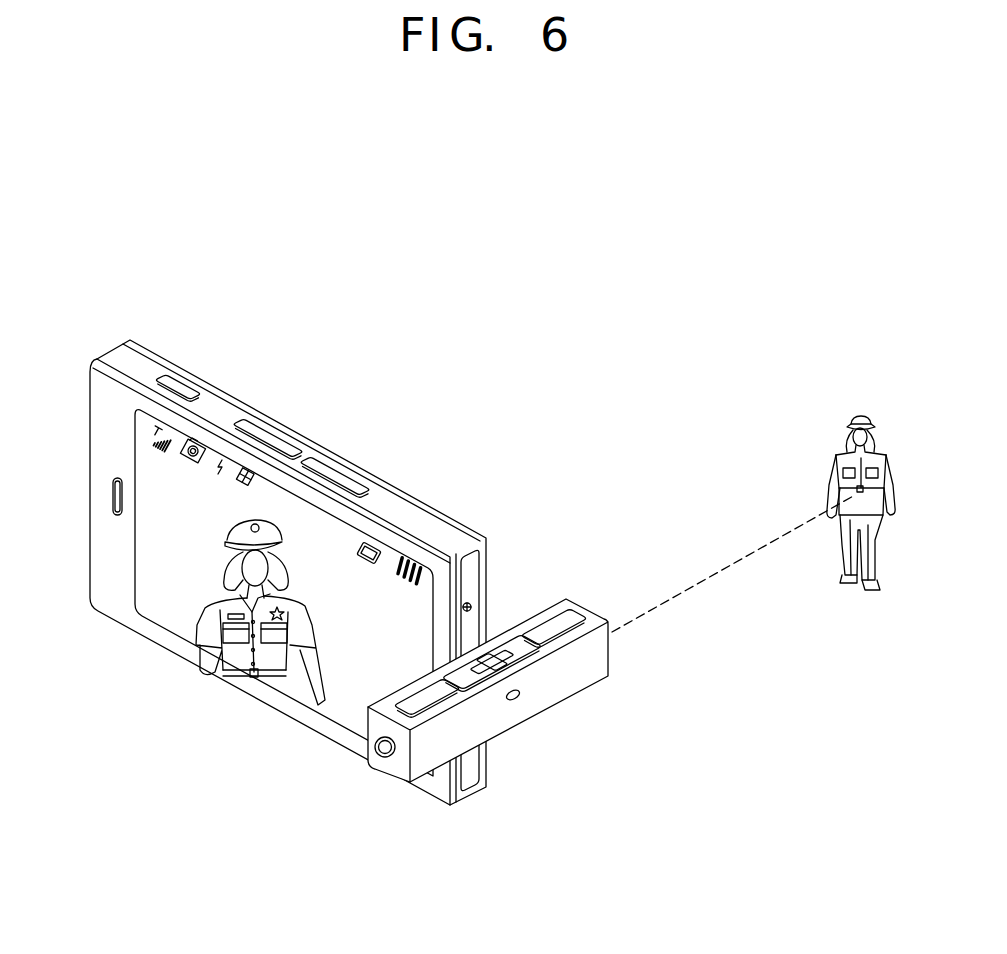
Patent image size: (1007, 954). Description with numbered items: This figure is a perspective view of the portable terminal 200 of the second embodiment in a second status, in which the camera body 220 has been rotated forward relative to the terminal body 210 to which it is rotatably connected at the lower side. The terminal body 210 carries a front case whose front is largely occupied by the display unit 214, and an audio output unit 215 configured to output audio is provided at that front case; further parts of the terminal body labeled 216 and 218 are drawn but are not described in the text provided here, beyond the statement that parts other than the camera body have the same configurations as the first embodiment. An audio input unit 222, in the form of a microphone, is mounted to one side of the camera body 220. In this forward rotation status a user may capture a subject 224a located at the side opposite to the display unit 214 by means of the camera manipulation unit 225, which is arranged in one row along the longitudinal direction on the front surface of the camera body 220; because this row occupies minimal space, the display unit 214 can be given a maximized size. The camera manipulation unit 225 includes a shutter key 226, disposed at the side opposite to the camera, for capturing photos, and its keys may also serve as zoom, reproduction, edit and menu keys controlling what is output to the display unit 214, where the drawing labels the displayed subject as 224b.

The portable terminal 200 is at (135, 219).
The terminal body 210 is at (257, 393).
The display unit 214 is at (162, 613).
The audio output unit 215 is at (112, 497).
The function keys 216 is at (342, 477).
The power key 218 is at (180, 390).
The camera body 220 is at (586, 705).
The audio input unit 222 is at (520, 700).
The subject 224a is at (843, 468).
The image of subject 224b is at (242, 655).
The camera manipulation unit 225 is at (475, 677).
The shutter key 226 is at (380, 750).